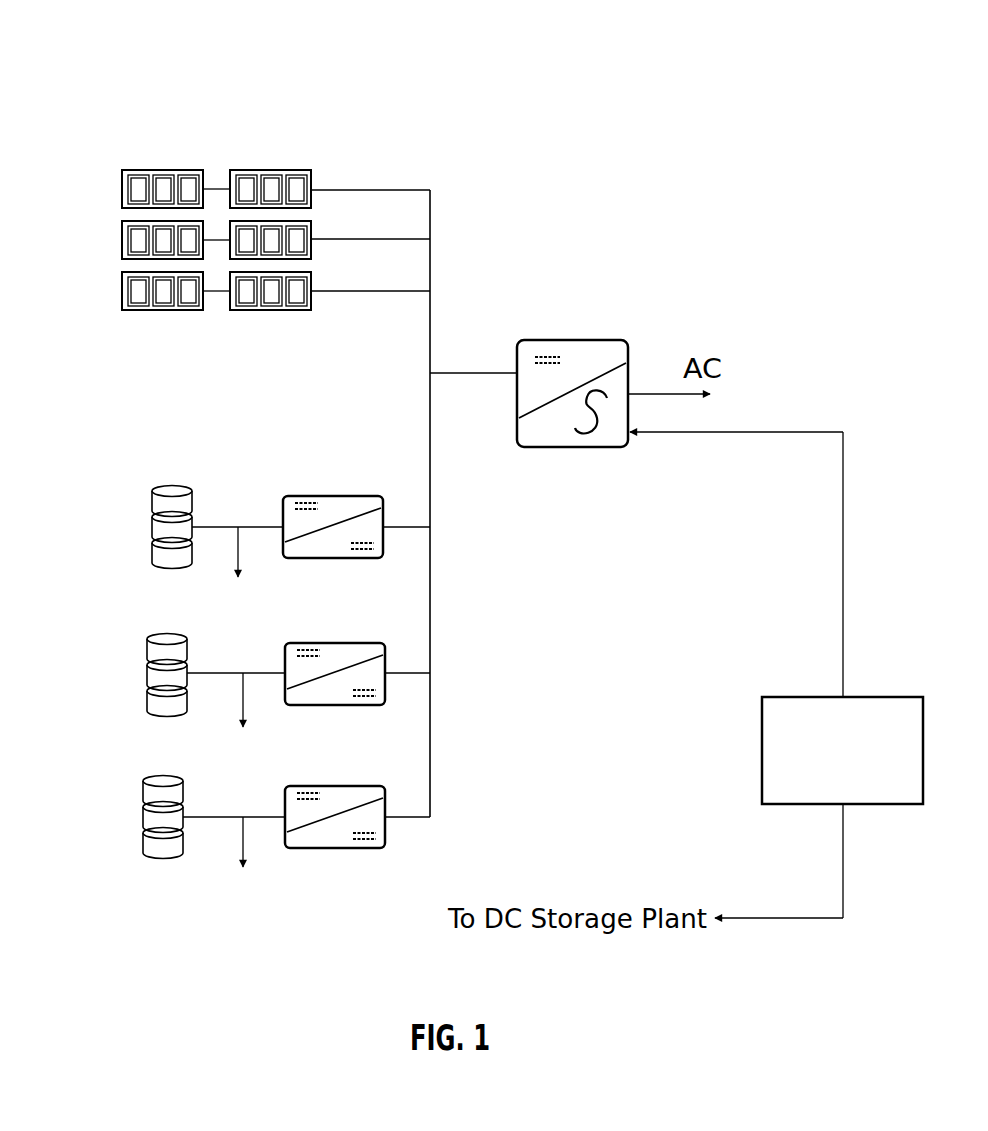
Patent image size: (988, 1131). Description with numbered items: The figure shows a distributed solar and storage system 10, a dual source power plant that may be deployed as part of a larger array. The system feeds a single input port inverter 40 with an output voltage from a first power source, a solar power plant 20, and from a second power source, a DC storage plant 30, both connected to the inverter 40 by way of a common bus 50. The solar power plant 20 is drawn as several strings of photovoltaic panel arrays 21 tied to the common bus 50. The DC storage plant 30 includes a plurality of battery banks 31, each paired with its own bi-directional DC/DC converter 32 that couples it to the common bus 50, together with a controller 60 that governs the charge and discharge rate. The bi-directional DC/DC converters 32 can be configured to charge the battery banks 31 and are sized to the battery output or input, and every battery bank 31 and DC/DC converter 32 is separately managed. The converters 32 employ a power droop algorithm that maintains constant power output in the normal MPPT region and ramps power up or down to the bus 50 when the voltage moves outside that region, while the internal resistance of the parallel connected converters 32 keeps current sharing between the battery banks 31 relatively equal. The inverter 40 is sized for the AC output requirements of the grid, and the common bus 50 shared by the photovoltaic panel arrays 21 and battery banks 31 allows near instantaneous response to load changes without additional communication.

The distributed solar and storage system 10 is at (132, 75).
The solar power plant 20 is at (88, 158).
The photovoltaic panel array 21 is at (172, 169).
The DC storage plant 30 is at (88, 494).
The battery bank 31 is at (143, 820).
The bi-directional DC/DC converter 32 is at (384, 828).
The single input port inverter 40 is at (585, 340).
The common bus 50 is at (428, 430).
The controller 60 is at (760, 750).